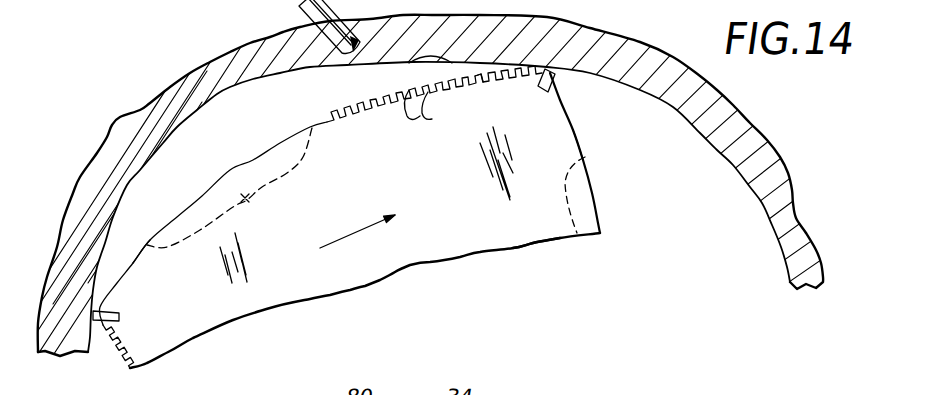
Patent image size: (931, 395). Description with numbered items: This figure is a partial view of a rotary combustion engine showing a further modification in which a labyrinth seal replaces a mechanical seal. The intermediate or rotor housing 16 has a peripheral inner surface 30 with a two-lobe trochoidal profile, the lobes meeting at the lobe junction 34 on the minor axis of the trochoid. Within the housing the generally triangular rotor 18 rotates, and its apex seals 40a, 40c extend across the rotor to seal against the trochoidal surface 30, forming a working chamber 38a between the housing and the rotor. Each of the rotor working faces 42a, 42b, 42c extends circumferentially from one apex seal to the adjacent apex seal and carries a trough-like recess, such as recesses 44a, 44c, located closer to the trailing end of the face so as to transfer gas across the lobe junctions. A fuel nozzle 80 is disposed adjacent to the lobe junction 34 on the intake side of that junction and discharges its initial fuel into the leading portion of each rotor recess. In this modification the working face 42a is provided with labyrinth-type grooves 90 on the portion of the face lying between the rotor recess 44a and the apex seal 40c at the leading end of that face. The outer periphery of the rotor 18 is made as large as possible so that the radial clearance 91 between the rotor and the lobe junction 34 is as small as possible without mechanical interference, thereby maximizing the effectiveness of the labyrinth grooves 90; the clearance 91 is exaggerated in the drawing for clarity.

The intermediate or rotor housing 16 is at (143, 127).
The rotor 18 is at (531, 236).
The peripheral inner surface 30 is at (189, 117).
The lobe junction 34 is at (412, 64).
The working chamber 38a is at (264, 127).
The apex seal 40a is at (113, 311).
The apex seal 40c is at (553, 78).
The rotor working face 42a is at (133, 262).
The rotor working face 42b is at (97, 325).
The rotor working face 42c is at (580, 133).
The trough-like recess 44a is at (249, 199).
The trough-like recess 44c is at (565, 189).
The fuel nozzle 80 is at (301, 17).
The labyrinth-type grooves 90 is at (120, 355).
The radial clearance 91 is at (463, 79).